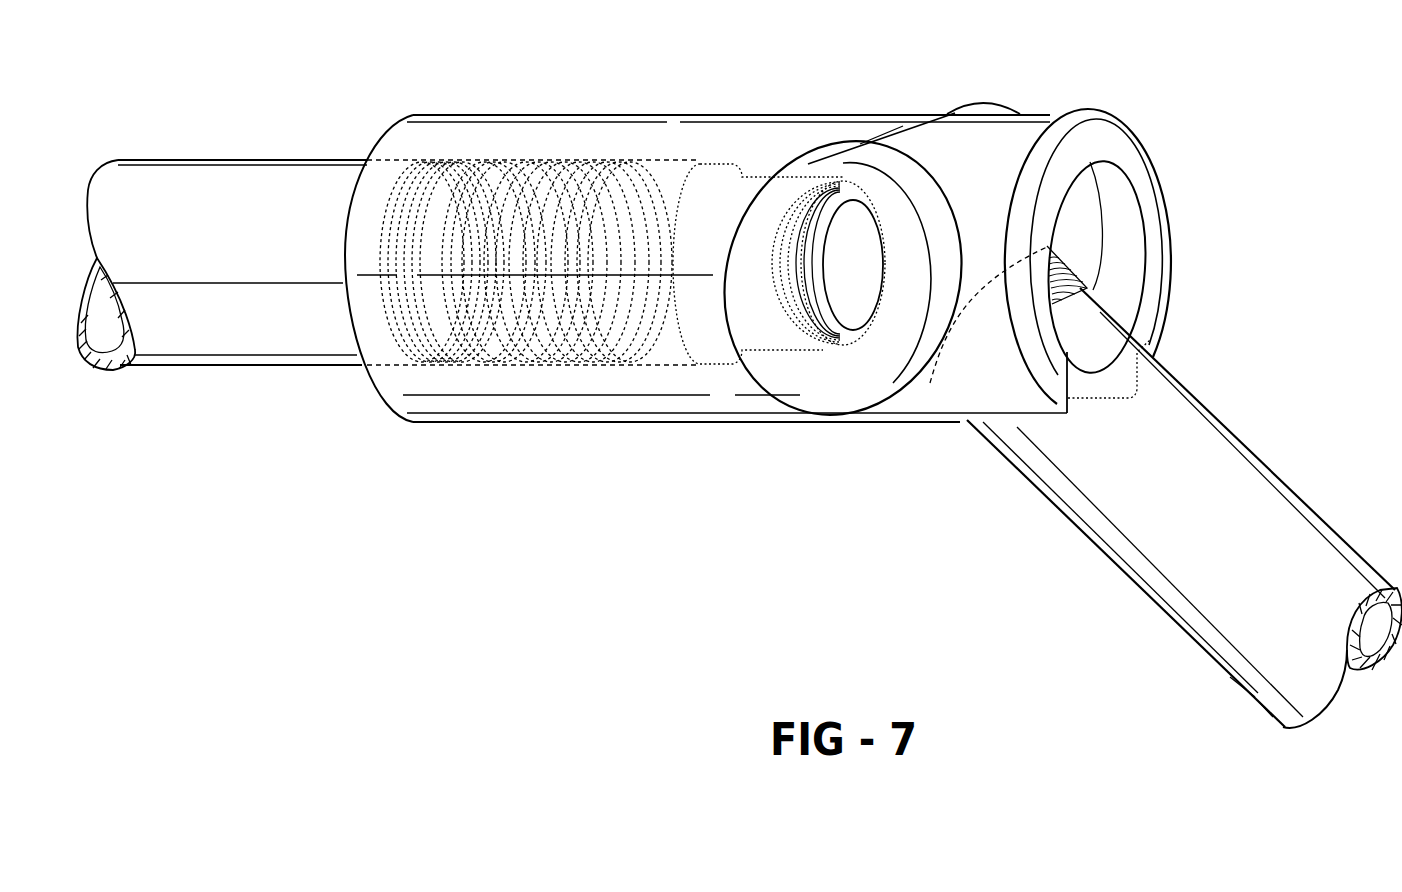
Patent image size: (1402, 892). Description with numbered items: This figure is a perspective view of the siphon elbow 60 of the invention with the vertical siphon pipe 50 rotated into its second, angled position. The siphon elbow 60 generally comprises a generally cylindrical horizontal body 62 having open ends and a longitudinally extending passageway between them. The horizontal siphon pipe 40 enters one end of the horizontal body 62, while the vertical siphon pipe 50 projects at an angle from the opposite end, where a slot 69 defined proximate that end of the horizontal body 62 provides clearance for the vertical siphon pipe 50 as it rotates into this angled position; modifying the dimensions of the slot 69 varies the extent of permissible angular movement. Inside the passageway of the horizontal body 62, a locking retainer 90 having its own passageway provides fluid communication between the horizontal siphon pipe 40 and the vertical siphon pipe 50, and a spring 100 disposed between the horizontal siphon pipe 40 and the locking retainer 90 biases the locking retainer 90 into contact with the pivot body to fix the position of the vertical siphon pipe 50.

The horizontal siphon pipe 40 is at (237, 152).
The vertical siphon pipe 50 is at (1243, 442).
The siphon elbow 60 is at (563, 88).
The horizontal body 62 is at (657, 114).
The slot 69 is at (1040, 432).
The locking retainer 90 is at (700, 330).
The spring 100 is at (562, 364).